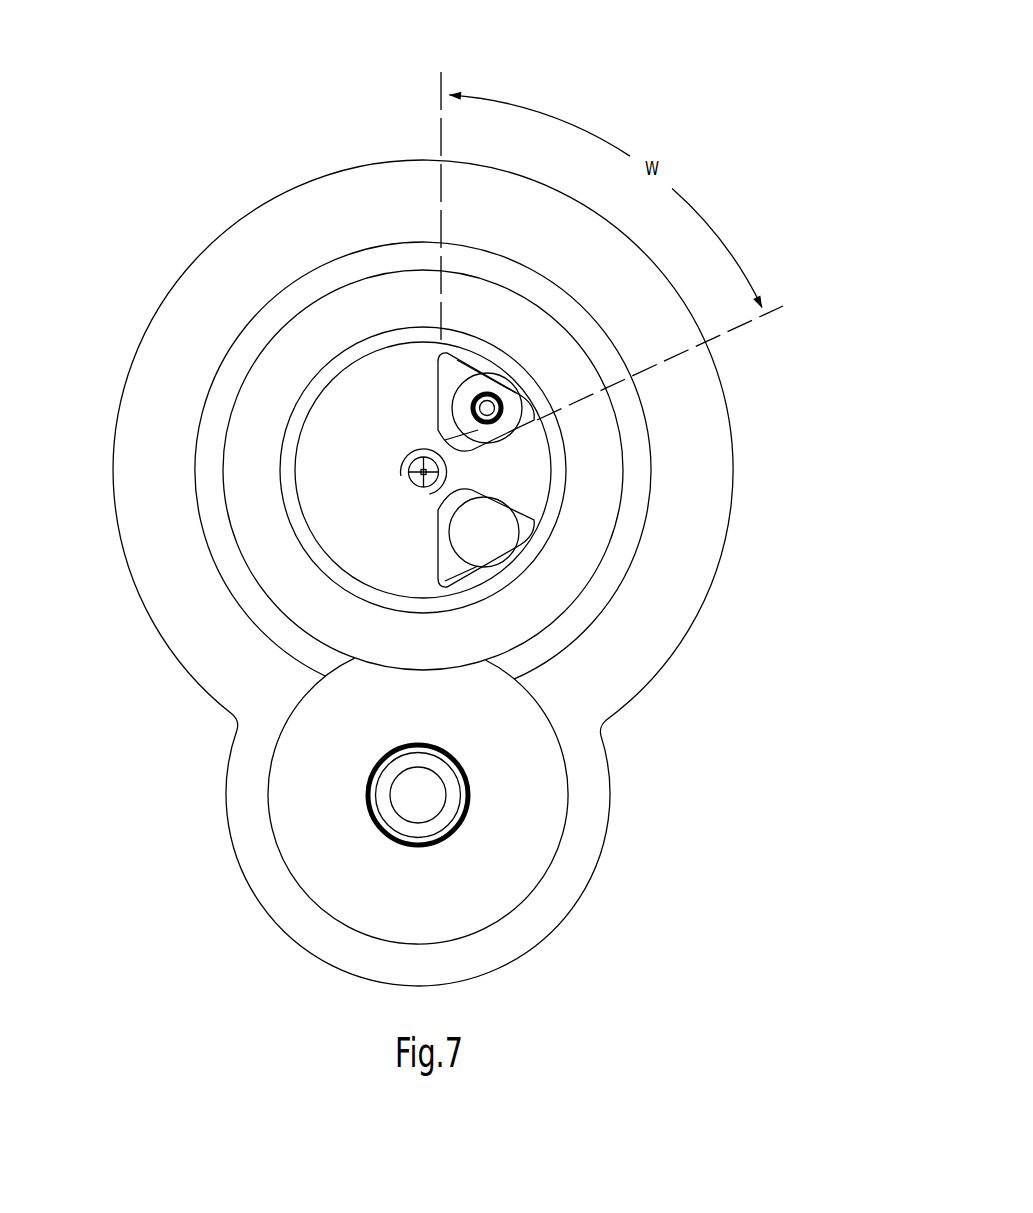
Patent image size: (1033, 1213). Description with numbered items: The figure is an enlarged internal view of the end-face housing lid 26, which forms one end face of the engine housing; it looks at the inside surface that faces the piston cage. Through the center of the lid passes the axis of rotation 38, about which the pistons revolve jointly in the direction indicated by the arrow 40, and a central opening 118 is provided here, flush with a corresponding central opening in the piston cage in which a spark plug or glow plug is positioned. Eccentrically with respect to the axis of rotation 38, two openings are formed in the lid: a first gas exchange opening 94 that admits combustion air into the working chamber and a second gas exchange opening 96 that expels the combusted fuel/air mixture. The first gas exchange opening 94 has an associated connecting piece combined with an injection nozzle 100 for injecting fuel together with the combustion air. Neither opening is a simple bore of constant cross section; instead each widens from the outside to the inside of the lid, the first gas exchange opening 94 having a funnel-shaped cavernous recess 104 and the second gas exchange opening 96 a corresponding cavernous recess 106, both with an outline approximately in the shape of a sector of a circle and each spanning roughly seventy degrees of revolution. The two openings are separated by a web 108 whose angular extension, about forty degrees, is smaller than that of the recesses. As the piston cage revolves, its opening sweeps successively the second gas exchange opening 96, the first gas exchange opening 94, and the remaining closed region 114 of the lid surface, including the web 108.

The end-face housing lid 26 is at (270, 185).
The axis of rotation 38 is at (404, 494).
The arrow 40 is at (401, 464).
The first gas exchange opening 94 is at (458, 404).
The second gas exchange opening 96 is at (491, 537).
The injection nozzle 100 is at (478, 479).
The cavernous recess 104 is at (438, 370).
The cavernous recess 106 is at (456, 569).
The web 108 is at (487, 410).
The closed region 114 is at (362, 430).
The central opening 118 is at (419, 494).